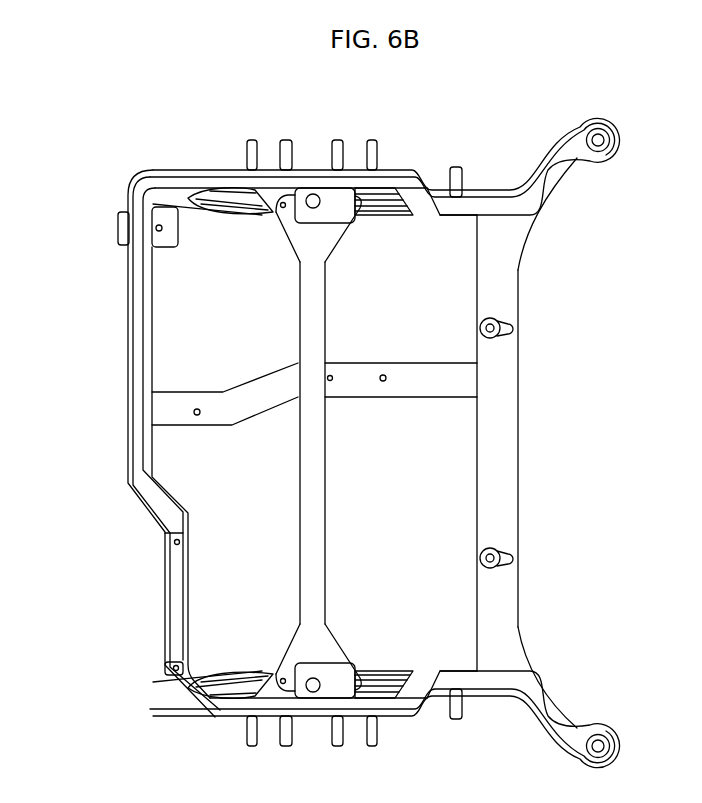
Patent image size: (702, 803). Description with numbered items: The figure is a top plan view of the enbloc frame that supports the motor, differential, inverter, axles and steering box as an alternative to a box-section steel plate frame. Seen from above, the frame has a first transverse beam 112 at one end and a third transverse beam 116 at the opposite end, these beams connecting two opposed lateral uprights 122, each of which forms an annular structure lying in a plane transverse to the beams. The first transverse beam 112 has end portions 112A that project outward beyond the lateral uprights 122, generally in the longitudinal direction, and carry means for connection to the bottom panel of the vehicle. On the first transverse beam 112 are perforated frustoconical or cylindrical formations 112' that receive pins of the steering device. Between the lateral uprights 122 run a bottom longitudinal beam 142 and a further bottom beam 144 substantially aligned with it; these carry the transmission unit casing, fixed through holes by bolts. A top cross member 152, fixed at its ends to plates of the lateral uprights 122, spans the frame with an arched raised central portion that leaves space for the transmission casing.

The first transverse beam 112 is at (525, 443).
The end portions of the first transverse beam 112A is at (577, 167).
The perforated frustoconical or cylindrical formations 112' is at (546, 443).
The third transverse beam 116 is at (137, 317).
The lateral uprights 122 is at (410, 162).
The bottom longitudinal beam 142 is at (362, 373).
The further bottom beam 144 is at (232, 400).
The top cross member 152 is at (313, 495).